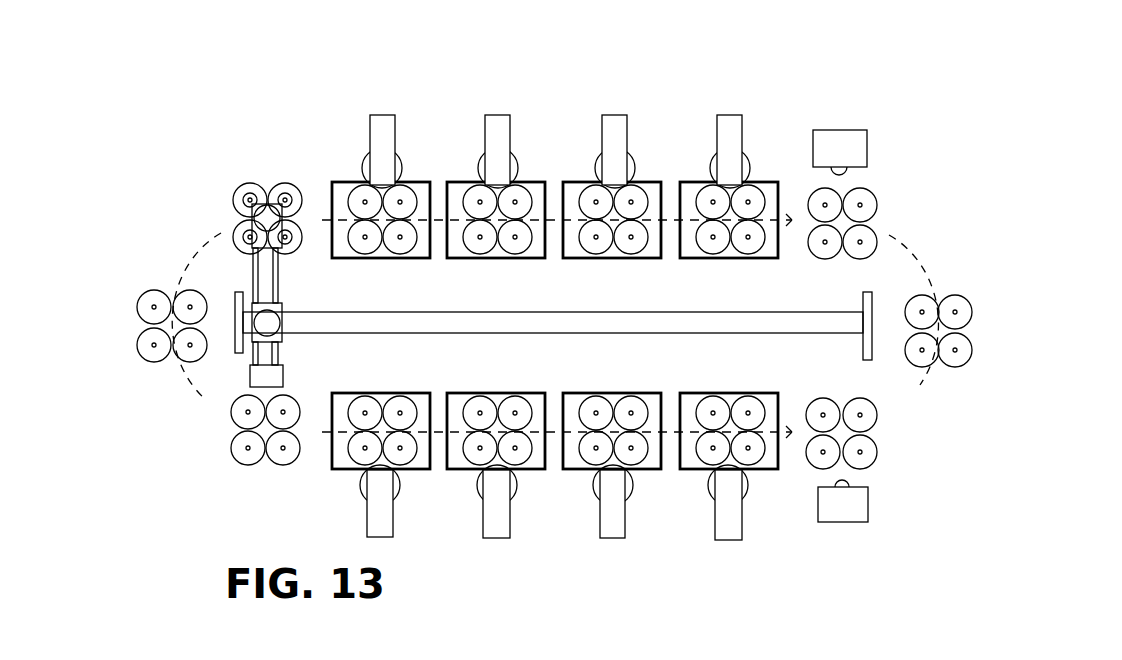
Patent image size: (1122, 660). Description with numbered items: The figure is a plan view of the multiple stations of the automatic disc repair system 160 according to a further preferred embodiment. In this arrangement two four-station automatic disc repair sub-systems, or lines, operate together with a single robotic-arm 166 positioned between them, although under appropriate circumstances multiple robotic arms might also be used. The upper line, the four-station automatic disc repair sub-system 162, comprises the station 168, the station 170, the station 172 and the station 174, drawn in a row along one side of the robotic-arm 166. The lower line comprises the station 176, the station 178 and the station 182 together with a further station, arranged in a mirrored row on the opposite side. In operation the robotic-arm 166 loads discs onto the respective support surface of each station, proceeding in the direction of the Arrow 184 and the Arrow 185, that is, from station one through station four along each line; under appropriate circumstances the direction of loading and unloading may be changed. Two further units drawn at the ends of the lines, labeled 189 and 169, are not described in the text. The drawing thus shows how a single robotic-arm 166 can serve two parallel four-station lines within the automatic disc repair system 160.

The automatic disc repair system 160 is at (167, 476).
The four-station automatic disc repair sub-system 162 is at (333, 166).
The robotic-arm 166 is at (250, 268).
The station 168 is at (395, 115).
The station 170 is at (510, 115).
The station 172 is at (627, 115).
The station 174 is at (742, 115).
The station 176 is at (715, 540).
The station 178 is at (600, 537).
The station 182 is at (483, 537).
The Arrow 184 is at (393, 537).
The Arrow 185 is at (785, 435).
The output unit (top) 189 is at (797, 222).
The output unit (bottom) 169 is at (765, 537).